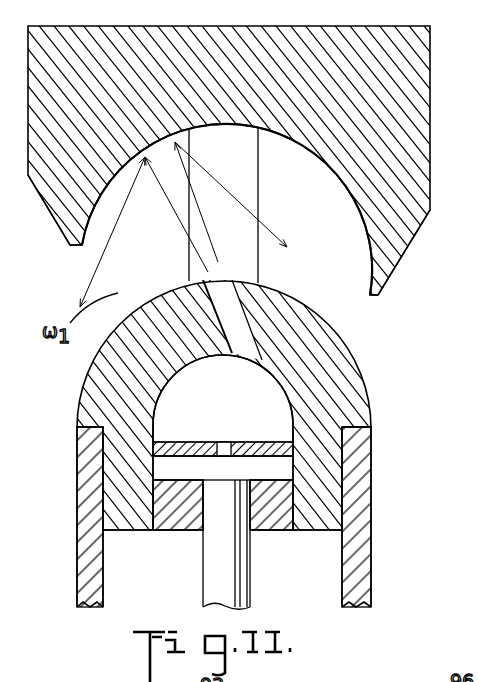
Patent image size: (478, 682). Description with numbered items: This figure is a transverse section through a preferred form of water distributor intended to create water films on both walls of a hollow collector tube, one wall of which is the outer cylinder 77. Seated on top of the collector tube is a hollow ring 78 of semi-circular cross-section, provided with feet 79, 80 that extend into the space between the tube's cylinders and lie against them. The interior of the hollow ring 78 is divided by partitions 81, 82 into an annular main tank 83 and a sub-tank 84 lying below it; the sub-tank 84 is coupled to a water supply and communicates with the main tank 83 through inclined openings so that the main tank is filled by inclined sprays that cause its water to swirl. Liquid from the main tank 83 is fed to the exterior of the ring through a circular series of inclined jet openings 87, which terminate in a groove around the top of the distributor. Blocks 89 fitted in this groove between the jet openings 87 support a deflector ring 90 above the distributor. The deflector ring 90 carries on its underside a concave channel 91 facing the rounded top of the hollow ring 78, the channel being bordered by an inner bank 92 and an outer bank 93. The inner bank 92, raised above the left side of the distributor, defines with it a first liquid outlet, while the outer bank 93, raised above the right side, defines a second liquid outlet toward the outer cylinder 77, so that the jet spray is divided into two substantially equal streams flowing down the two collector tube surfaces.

The outer cylinder 77 is at (360, 553).
The hollow ring 78 is at (352, 357).
The foot 79 is at (315, 531).
The foot 80 is at (130, 531).
The partition 81 is at (172, 531).
The partition 82 is at (258, 447).
The annular main tank 83 is at (223, 398).
The sub-tank 84 is at (202, 465).
The inclined jet openings 87 is at (228, 297).
The blocks 89 is at (250, 180).
The deflector ring 90 is at (415, 173).
The concave channel 91 is at (355, 205).
The inner bank 92 is at (74, 248).
The outer bank 93 is at (373, 297).